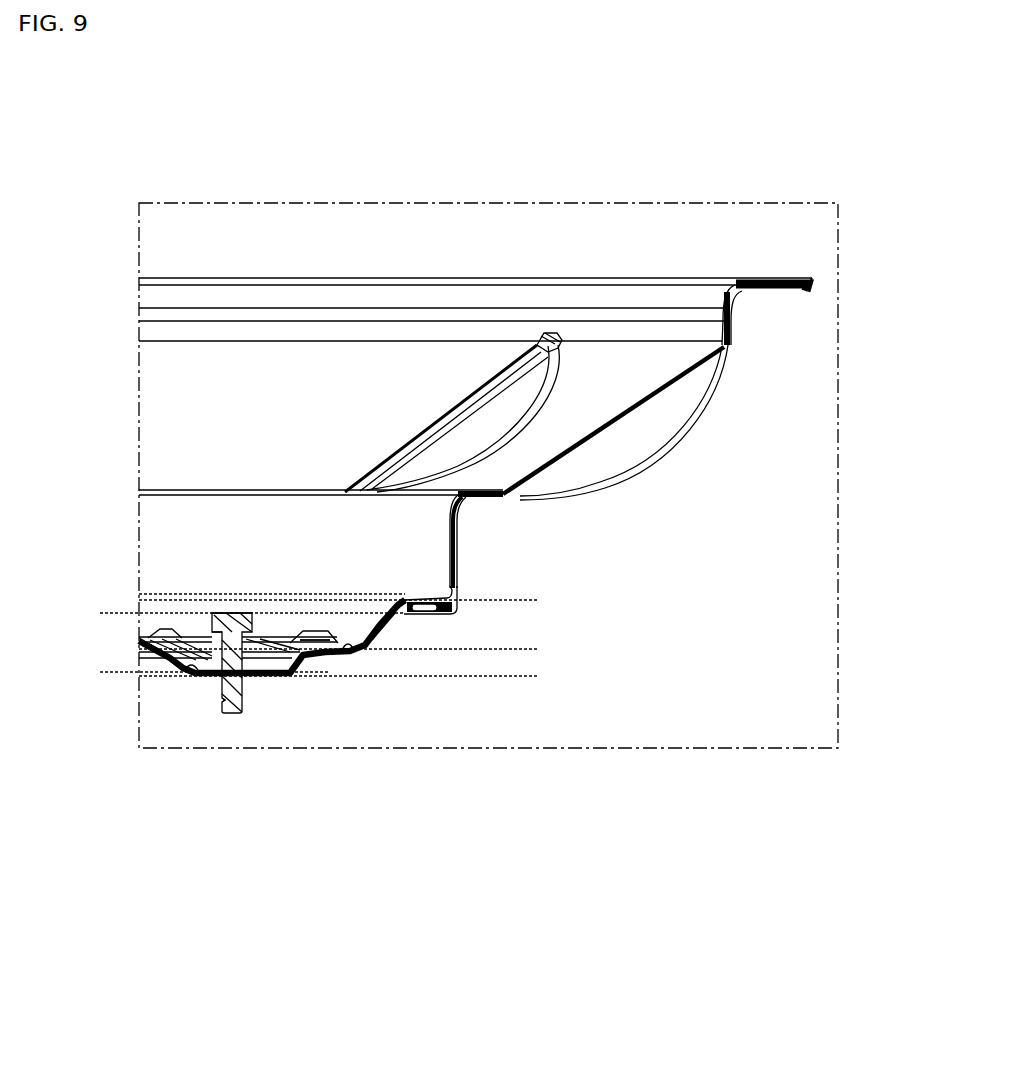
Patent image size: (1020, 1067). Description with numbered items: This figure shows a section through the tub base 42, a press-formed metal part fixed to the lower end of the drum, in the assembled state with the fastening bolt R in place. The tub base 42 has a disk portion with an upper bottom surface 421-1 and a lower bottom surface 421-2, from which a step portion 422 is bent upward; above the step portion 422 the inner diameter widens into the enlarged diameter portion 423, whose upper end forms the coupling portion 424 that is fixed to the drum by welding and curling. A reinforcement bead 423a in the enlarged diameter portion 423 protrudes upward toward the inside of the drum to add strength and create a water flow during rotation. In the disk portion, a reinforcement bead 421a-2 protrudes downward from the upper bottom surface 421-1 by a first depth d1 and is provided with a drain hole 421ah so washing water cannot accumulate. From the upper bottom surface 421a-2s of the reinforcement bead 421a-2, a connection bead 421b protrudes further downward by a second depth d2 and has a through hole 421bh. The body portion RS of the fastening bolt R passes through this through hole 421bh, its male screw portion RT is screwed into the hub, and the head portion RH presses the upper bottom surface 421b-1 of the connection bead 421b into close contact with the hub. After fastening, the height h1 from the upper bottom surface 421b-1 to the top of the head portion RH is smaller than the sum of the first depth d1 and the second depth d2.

The tub base 42 is at (642, 252).
The coupling portion 424 is at (783, 287).
The enlarged diameter portion 423 is at (730, 344).
The reinforcement bead 423a is at (466, 440).
The step portion 422 is at (462, 540).
The upper bottom surface of the disk portion 421-1 is at (455, 592).
The reinforcement bead 421a-2 is at (382, 632).
The lower bottom surface of the disk portion 421-2 is at (413, 613).
The upper bottom surface of the reinforcement bead 421a-2s is at (355, 657).
The connection bead 421b is at (198, 668).
The upper bottom surface of the connection bead 421b-1 is at (195, 677).
The through hole 421bh is at (246, 688).
The drain hole 421ah is at (307, 662).
The male screw portion RT is at (244, 716).
The body portion RS is at (225, 700).
The fastening bolt R is at (216, 602).
The head portion RH is at (210, 625).
The height h1 is at (107, 613).
The first depth d1 is at (527, 600).
The second depth d2 is at (527, 649).